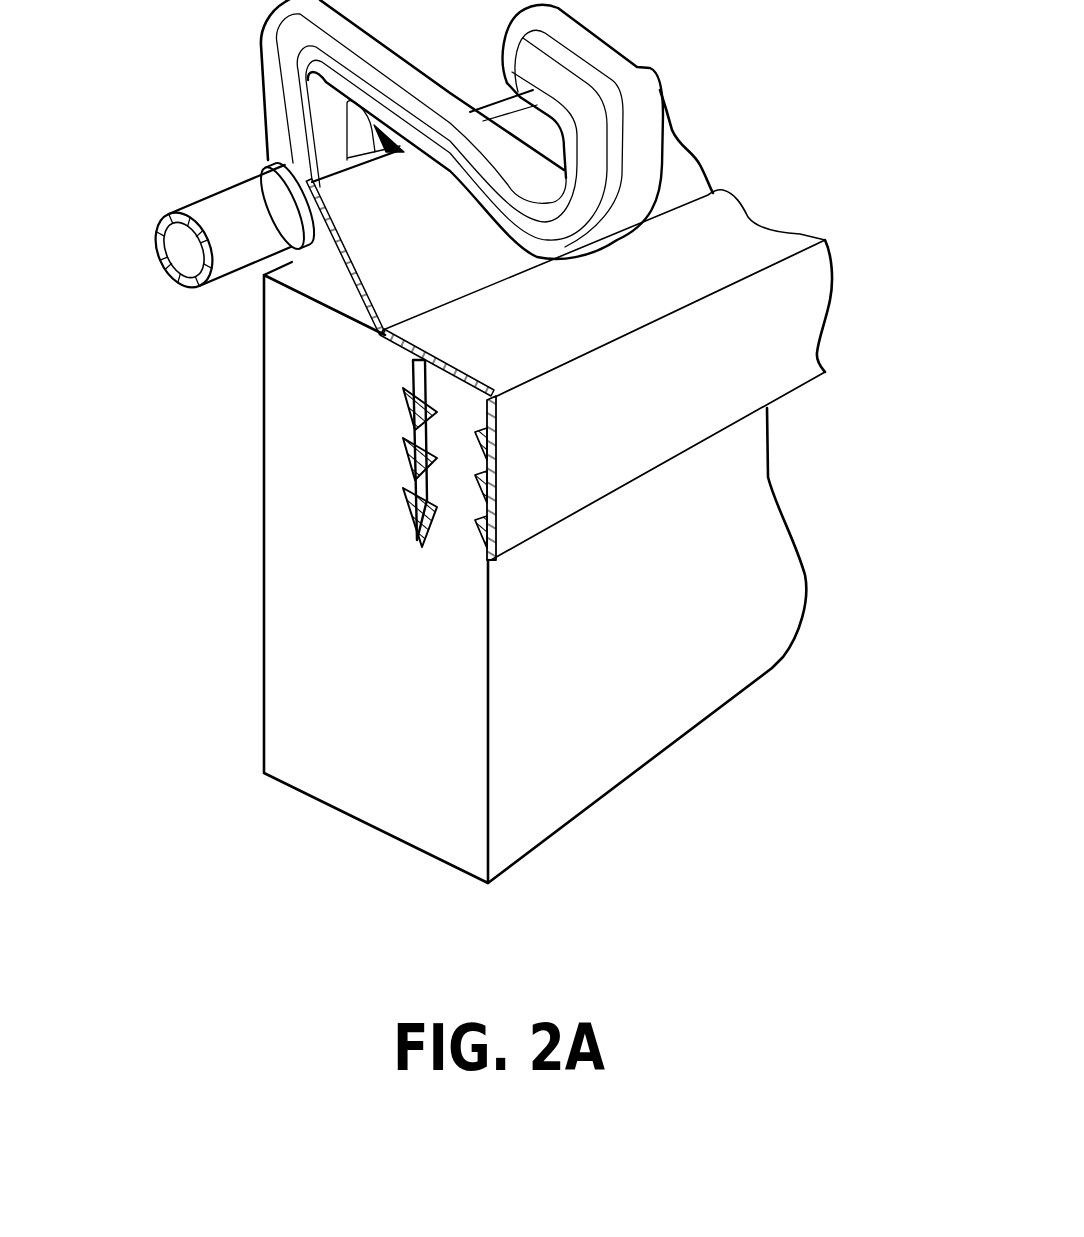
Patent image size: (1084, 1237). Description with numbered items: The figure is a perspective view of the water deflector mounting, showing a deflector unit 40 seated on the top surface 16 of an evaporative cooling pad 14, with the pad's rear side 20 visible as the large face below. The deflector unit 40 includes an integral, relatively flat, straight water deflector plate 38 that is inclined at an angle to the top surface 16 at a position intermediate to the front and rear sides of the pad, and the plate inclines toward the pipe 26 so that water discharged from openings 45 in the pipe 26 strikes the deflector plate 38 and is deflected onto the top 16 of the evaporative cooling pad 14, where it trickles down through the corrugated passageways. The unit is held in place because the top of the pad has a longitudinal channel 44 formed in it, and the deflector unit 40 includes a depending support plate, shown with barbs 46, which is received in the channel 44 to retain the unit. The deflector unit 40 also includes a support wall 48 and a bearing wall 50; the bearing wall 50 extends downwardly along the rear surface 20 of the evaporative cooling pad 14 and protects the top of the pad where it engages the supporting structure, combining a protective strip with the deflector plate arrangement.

The evaporative cooling pad 14 is at (275, 553).
The top surface 16 is at (262, 274).
The rear side 20 is at (636, 728).
The pipe 26 is at (183, 212).
The water deflector plate 38 is at (640, 125).
The deflector unit 40 is at (663, 343).
The longitudinal channel 44 is at (430, 543).
The openings 45 is at (290, 170).
The barbed tang 46 is at (420, 418).
The support wall 48 is at (712, 228).
The bearing wall 50 is at (797, 326).